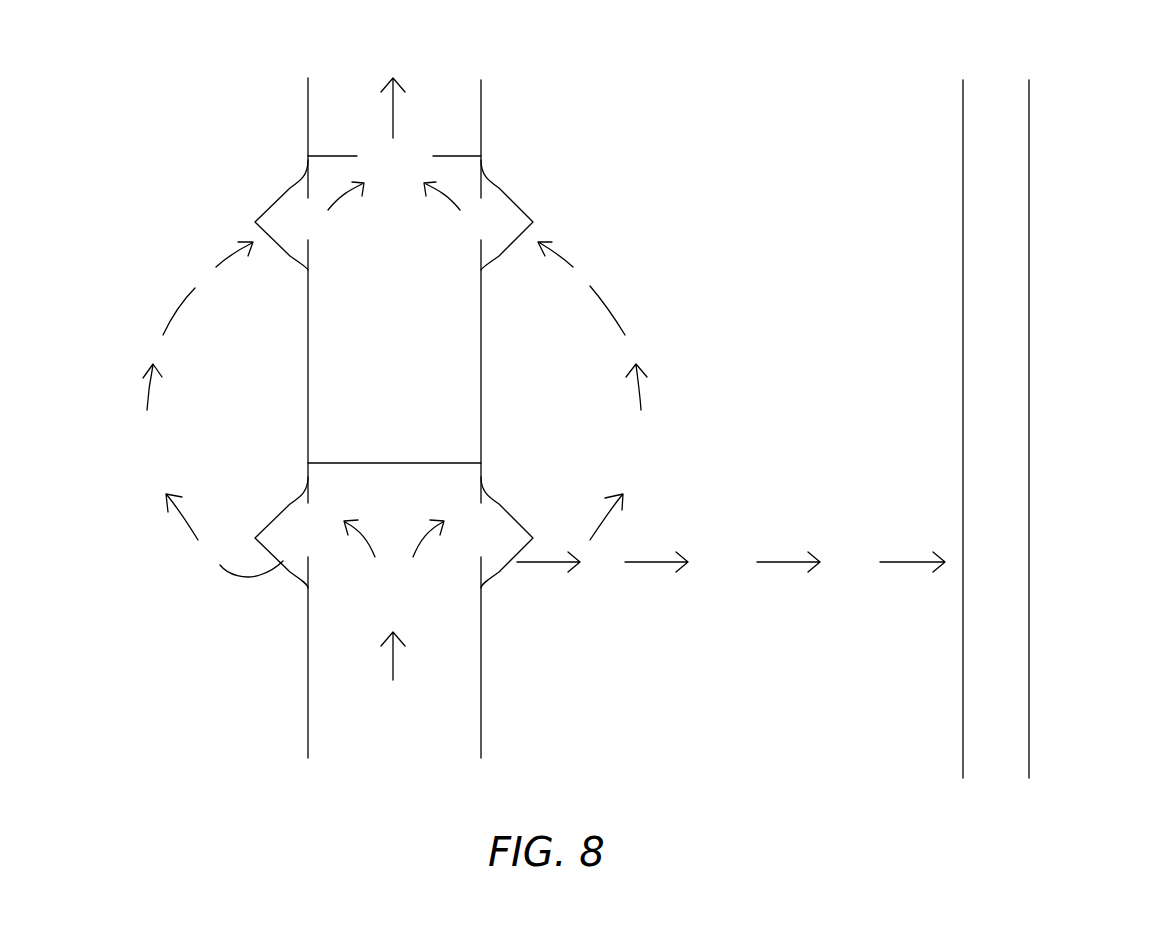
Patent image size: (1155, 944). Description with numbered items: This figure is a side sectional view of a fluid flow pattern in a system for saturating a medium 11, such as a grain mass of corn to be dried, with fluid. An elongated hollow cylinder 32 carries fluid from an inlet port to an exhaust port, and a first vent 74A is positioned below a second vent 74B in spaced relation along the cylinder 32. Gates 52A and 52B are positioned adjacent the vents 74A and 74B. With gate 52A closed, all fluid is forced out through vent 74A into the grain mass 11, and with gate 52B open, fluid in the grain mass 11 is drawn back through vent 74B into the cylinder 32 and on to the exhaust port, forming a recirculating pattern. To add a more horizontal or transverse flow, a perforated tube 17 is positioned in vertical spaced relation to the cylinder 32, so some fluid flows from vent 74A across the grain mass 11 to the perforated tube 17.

The elongated hollow cylinder 32 is at (481, 712).
The second vent 74B is at (507, 194).
The gate 52B is at (457, 155).
The first vent 74A is at (505, 511).
The gate 52A is at (393, 462).
The medium 11 is at (770, 345).
The perforated tube 17 is at (1029, 337).